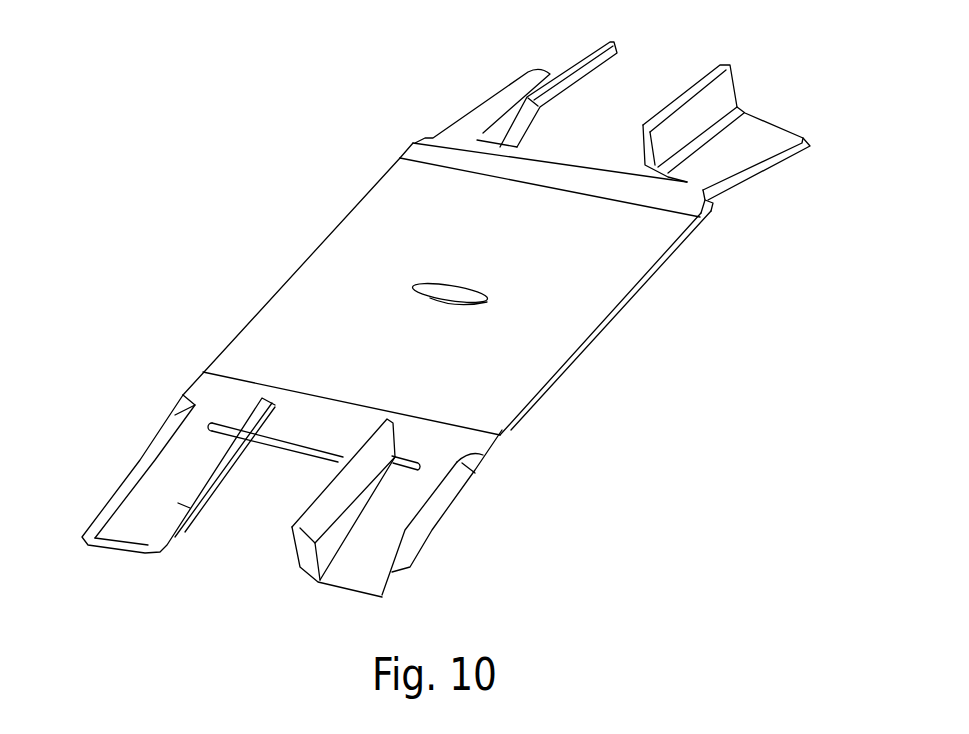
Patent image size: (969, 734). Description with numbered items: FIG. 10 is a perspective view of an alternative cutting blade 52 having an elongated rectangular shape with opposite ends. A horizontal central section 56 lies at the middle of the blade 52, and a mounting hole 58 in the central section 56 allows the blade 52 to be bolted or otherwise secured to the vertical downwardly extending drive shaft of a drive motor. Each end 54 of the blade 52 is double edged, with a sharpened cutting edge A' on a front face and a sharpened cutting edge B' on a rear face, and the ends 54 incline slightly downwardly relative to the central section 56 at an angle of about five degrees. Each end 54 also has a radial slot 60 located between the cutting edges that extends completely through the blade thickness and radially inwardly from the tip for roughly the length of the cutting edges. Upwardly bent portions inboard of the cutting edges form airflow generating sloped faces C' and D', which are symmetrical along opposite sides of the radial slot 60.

The blade 52 is at (440, 303).
The end 54 is at (767, 120).
The central section 56 is at (448, 289).
The mounting hole 58 is at (438, 286).
The slot 60 is at (652, 47).